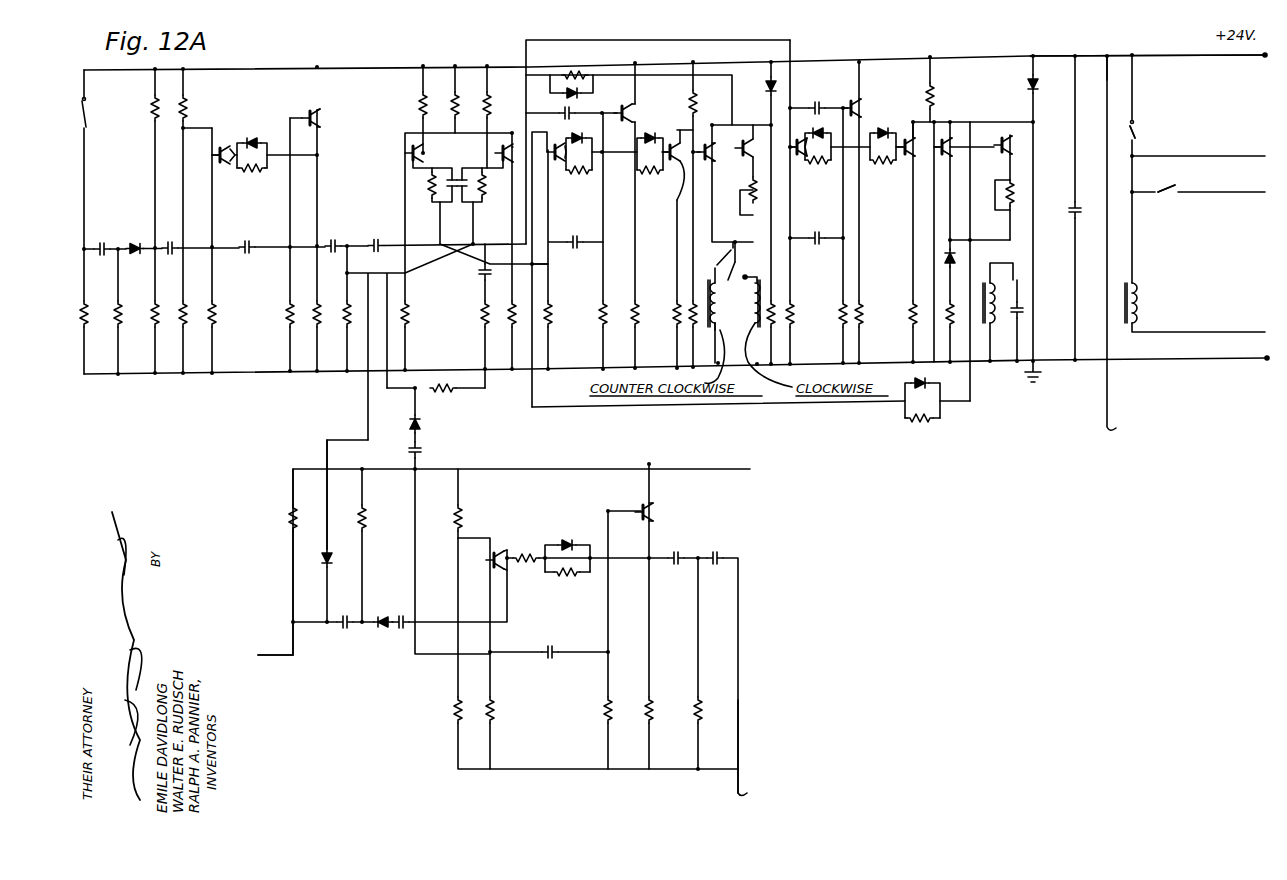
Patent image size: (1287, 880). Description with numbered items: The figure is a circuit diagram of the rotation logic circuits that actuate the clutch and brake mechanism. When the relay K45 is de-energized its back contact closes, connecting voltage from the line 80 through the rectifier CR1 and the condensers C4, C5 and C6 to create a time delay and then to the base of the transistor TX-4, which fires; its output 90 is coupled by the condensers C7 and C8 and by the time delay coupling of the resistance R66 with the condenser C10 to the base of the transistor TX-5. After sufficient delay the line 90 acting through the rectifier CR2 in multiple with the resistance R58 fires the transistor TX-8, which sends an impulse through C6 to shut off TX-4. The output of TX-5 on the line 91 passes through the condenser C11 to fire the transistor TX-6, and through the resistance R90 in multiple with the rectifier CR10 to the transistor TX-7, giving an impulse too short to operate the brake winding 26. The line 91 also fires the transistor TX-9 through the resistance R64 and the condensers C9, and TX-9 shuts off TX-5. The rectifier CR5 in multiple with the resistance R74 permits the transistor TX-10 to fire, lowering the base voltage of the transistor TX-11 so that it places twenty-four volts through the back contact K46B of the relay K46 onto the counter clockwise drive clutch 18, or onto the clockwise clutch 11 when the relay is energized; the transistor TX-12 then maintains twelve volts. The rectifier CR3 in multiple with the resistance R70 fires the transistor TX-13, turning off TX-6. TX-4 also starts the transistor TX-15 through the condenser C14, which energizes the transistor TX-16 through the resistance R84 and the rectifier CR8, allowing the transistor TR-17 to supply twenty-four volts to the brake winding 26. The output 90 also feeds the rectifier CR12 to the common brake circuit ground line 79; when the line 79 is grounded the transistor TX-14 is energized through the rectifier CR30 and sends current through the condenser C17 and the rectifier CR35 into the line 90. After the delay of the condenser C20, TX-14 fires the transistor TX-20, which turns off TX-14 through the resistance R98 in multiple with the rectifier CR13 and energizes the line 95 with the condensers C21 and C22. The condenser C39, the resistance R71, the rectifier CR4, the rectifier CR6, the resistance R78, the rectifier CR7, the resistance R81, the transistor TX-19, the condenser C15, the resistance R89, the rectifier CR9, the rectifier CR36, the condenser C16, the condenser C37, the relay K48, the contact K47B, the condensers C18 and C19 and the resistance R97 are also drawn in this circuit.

The line 80 is at (97, 52).
The relay K45 is at (100, 114).
The condenser C4 is at (101, 237).
The rectifier CR1 is at (131, 258).
The condenser C5 is at (169, 236).
The condenser C6 is at (243, 236).
The condenser C7 is at (333, 235).
The condenser C8 is at (374, 235).
The transistor TX-8 is at (217, 160).
The rectifier CR2 is at (252, 145).
The resistance R58 is at (276, 172).
The transistor TX-4 is at (323, 112).
The output line 90 is at (318, 155).
The transistor TX-9 is at (410, 154).
The resistance R64 is at (427, 185).
The condenser C10 is at (452, 180).
The condenser C9 is at (509, 214).
The resistance R66 is at (485, 185).
The transistor TX-5 is at (505, 146).
The capacitor C39 is at (468, 273).
The line 91 is at (534, 103).
The resistor R71 is at (568, 75).
The diode CR4 is at (594, 93).
The condenser C11 is at (578, 118).
The transistor TX-13 is at (553, 158).
The rectifier CR3 is at (584, 149).
The resistance R70 is at (601, 169).
The transistor TX-6 is at (638, 107).
The rectifier CR5 is at (650, 144).
The resistance R74 is at (652, 169).
The transistor TX-10 is at (662, 165).
The diode CR6 is at (770, 88).
The transistor TX-12 is at (745, 146).
The transistor TX-11 is at (721, 158).
The resistor R78 is at (739, 196).
The back contact K46B is at (748, 314).
The clutch 11 is at (752, 305).
The counter clockwise drive clutch 18 is at (726, 321).
The condenser C14 is at (819, 100).
The diode CR7 is at (817, 140).
The resistor R81 is at (837, 166).
The transistor TX-19 is at (798, 153).
The capacitor C15 is at (815, 230).
The transistor TX-15 is at (854, 112).
The rectifier CR8 is at (883, 138).
The resistance R84 is at (886, 166).
The transistor TX-16 is at (908, 143).
The transistor TR-17 is at (959, 136).
The transistor TX-7 is at (1005, 141).
The resistor R89 is at (996, 195).
The diode CR9 is at (1010, 81).
The diode CR36 is at (945, 258).
The brake winding 26 is at (998, 295).
The capacitor C16 is at (1022, 312).
The capacitor C37 is at (1086, 216).
The relay K48 is at (1107, 55).
The relay contact K47B is at (1155, 129).
The relay K46 is at (1150, 254).
The rectifier CR10 is at (922, 389).
The resistance R90 is at (922, 427).
The rectifier CR35 is at (436, 425).
The condenser C17 is at (431, 451).
The rectifier CR12 is at (341, 565).
The capacitor C18 is at (343, 614).
The capacitor C19 is at (398, 614).
The rectifier CR30 is at (377, 630).
The common brake circuit ground line 79 is at (258, 655).
The transistor TX-14 is at (491, 556).
The resistor R97 is at (526, 550).
The rectifier CR13 is at (567, 548).
The resistance R98 is at (567, 581).
The transistor TX-20 is at (650, 511).
The condenser C21 is at (670, 549).
The condenser C22 is at (712, 549).
The condenser C20 is at (549, 661).
The line 95 is at (740, 728).